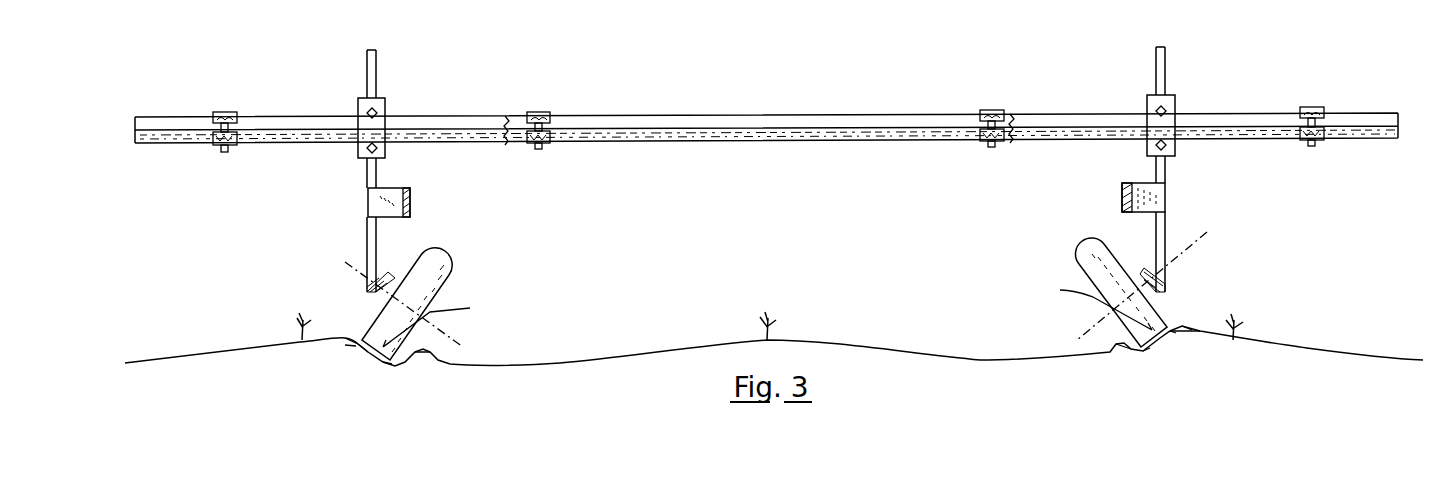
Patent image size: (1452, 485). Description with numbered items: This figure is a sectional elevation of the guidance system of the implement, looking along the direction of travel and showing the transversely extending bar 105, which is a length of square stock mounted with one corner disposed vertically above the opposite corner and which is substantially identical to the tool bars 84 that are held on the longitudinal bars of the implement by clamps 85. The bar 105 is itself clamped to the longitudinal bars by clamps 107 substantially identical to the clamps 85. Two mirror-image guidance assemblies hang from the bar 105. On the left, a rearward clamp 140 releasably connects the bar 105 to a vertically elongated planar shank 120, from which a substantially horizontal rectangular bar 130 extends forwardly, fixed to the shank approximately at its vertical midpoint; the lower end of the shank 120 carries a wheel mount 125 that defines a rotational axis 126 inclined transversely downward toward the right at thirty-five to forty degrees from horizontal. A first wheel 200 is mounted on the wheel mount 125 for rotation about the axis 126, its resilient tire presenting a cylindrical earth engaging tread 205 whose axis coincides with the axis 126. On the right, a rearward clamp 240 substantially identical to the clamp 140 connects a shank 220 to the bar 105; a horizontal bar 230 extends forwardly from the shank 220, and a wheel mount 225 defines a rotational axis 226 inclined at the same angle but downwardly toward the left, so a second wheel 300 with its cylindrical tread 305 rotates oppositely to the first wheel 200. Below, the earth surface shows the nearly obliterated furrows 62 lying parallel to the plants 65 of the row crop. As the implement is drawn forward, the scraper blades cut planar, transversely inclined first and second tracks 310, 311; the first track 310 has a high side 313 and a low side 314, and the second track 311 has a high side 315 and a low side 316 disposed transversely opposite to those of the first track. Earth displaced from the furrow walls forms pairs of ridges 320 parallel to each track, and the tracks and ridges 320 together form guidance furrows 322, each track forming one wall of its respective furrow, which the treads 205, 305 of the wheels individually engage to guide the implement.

The furrows 62 is at (571, 364).
The plants 65 is at (304, 322).
The tool bars 84 is at (520, 120).
The clamps 85 is at (540, 150).
The transversely extending bar 105 is at (135, 137).
The clamps 107 is at (225, 153).
The shank 120 is at (371, 50).
The wheel mount 125 is at (384, 280).
The rotational axis 126 is at (347, 263).
The horizontal rectangular bar 130 is at (410, 188).
The rearward clamp 140 is at (358, 110).
The first wheel 200 is at (488, 285).
The earth engaging tread 205 is at (440, 262).
The shank 220 is at (1160, 47).
The wheel mount 225 is at (1150, 270).
The rotational axis 226 is at (1200, 240).
The horizontal bar 230 is at (1132, 183).
The rearward clamp 240 is at (1147, 108).
The second wheel 300 is at (1054, 271).
The earth engaging cylindrical tread 305 is at (1093, 258).
The first track 310 is at (366, 349).
The second track 311 is at (1174, 334).
The high side 313 is at (355, 346).
The low side 314 is at (389, 363).
The high side 315 is at (1188, 333).
The low side 316 is at (1147, 351).
The ridges 320 is at (352, 338).
The guidance furrows 322 is at (767, 311).